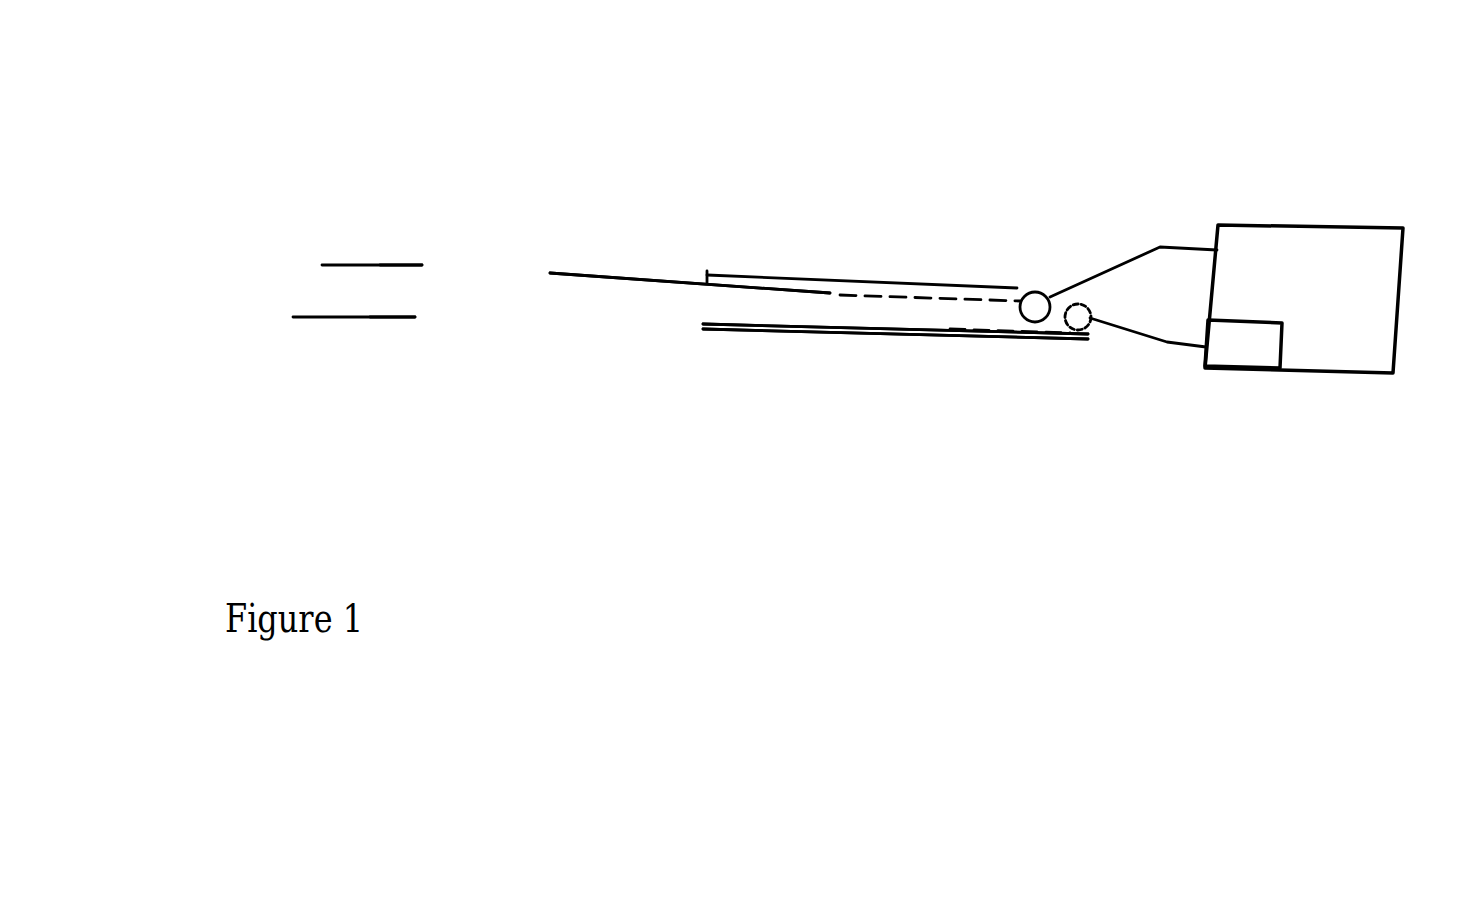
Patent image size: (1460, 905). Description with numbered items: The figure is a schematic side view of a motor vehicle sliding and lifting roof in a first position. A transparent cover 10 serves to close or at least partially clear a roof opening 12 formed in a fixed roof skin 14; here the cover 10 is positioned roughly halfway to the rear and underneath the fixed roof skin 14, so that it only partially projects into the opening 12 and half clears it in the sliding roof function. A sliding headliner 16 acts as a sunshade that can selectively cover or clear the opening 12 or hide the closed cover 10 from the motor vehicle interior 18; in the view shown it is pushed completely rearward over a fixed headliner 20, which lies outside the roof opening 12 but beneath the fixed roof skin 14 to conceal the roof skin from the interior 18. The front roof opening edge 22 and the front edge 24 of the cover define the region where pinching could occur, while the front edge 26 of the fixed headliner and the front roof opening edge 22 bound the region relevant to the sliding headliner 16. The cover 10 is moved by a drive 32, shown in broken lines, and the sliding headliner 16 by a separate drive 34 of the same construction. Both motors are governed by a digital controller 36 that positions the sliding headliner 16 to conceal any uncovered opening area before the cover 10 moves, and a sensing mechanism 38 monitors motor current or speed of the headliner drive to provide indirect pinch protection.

The cover 10 is at (625, 266).
The roof opening 12 is at (553, 318).
The fixed roof skin 14 is at (357, 263).
The sliding headliner 16 is at (804, 310).
The motor vehicle interior 18 is at (828, 418).
The fixed headliner 20 is at (320, 313).
The front roof opening edge 22 is at (420, 263).
The front edge of the cover 24 is at (550, 272).
The front edge of the fixed headliner 26 is at (413, 318).
The drive 32 is at (1047, 285).
The separate drive 34 is at (1094, 350).
The digital controller 36 is at (1358, 225).
The sensing mechanism 38 is at (1247, 350).